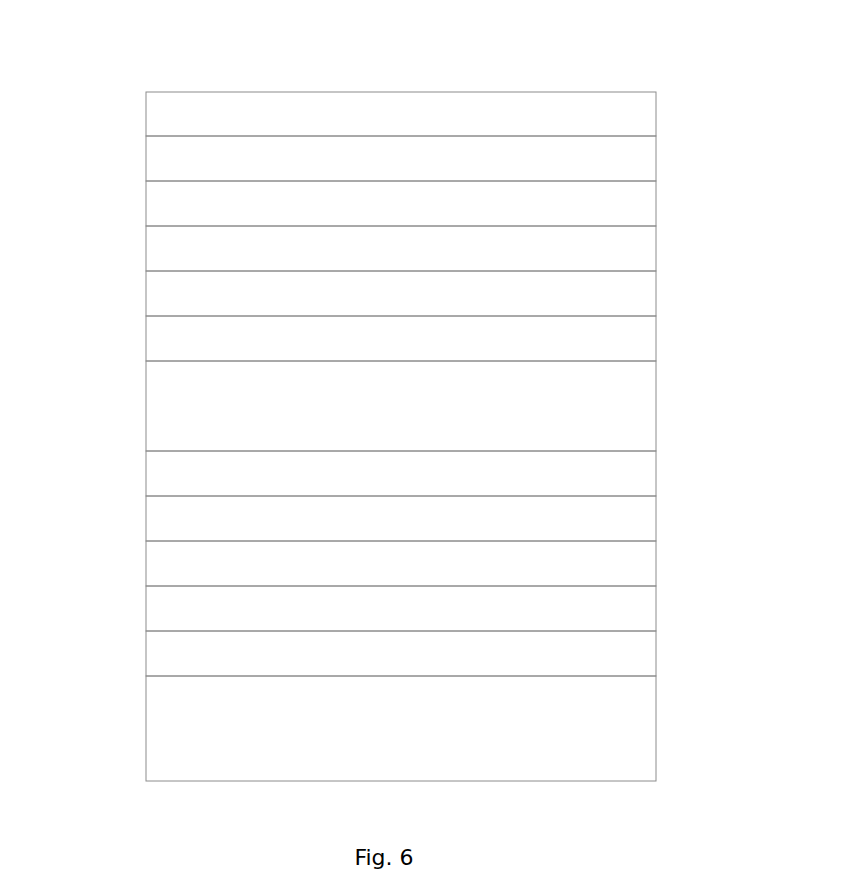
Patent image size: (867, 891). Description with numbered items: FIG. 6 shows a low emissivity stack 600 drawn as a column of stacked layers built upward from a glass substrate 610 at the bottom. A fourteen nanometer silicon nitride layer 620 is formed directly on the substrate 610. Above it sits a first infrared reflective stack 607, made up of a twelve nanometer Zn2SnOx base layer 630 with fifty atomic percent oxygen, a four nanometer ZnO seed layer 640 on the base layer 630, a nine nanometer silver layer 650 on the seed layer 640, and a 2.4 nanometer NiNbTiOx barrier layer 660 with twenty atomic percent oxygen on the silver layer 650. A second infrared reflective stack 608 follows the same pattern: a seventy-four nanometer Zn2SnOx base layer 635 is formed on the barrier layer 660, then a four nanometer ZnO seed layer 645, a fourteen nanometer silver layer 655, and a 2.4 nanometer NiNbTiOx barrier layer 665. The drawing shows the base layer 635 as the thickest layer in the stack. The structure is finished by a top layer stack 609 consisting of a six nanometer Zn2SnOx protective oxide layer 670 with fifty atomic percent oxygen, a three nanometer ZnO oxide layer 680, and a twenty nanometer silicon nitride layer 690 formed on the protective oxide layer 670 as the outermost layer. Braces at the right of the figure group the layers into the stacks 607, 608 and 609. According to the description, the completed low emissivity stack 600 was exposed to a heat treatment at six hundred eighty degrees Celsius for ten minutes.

The low emissivity stack 600 is at (101, 121).
The first infrared reflective stack 607 is at (665, 451).
The second infrared reflective stack 608 is at (665, 226).
The top layer stack 609 is at (665, 92).
The glass substrate 610 is at (380, 739).
The silicon nitride layer 620 is at (380, 664).
The Zn2SnOx base layer 630 is at (380, 619).
The Zn2SnOx base layer 635 is at (380, 416).
The ZnO seed layer 640 is at (380, 574).
The ZnO seed layer 645 is at (380, 349).
The silver layer 650 is at (380, 529).
The silver layer 655 is at (380, 304).
The NiNbTiOx barrier layer 660 is at (380, 484).
The NiNbTiOx barrier layer 665 is at (380, 259).
The Zn2SnOx protective oxide layer 670 is at (380, 214).
The ZnO oxide layer 680 is at (380, 169).
The silicon nitride layer 690 is at (380, 124).